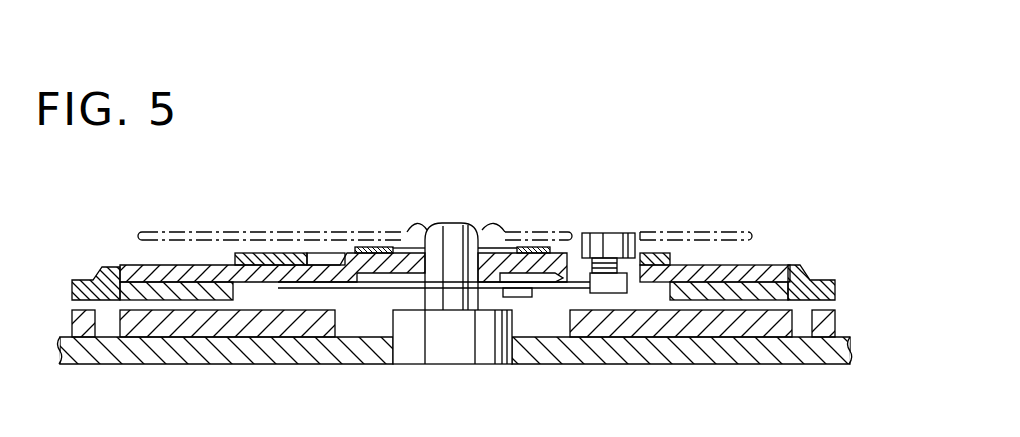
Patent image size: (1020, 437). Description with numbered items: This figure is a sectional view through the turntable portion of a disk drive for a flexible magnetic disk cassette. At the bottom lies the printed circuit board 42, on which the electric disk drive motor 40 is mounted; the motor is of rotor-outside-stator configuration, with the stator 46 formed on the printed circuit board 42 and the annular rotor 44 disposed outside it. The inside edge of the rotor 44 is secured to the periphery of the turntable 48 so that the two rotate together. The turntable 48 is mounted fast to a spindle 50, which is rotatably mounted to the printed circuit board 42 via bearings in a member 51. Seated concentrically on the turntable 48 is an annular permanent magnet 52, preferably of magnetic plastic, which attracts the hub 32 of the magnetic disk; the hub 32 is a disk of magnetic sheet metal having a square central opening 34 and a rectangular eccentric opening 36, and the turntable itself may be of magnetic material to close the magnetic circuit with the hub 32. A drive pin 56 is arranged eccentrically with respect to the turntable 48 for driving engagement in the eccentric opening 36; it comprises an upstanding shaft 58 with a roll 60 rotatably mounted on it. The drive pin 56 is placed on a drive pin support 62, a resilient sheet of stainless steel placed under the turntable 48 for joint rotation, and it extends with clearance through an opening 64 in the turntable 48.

The hub 32 is at (697, 230).
The central opening 34 is at (426, 226).
The eccentric opening 36 is at (573, 230).
The disk drive motor 40 is at (836, 314).
The printed circuit board 42 is at (755, 352).
The rotor 44 is at (104, 266).
The stator 46 is at (665, 328).
The turntable 48 is at (753, 272).
The spindle 50 is at (468, 226).
The member 51 is at (458, 352).
The permanent magnet 52 is at (277, 253).
The drive pin 56 is at (603, 208).
The upstanding shaft 58 is at (578, 284).
The roll 60 is at (613, 236).
The drive pin support 62 is at (365, 288).
The opening 64 is at (630, 278).